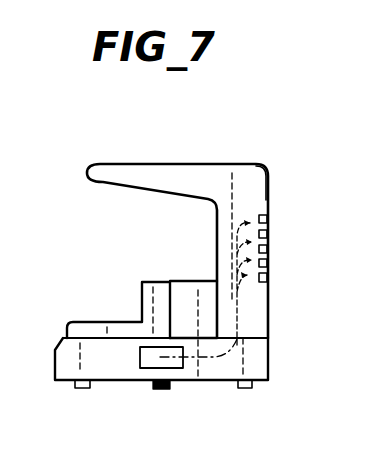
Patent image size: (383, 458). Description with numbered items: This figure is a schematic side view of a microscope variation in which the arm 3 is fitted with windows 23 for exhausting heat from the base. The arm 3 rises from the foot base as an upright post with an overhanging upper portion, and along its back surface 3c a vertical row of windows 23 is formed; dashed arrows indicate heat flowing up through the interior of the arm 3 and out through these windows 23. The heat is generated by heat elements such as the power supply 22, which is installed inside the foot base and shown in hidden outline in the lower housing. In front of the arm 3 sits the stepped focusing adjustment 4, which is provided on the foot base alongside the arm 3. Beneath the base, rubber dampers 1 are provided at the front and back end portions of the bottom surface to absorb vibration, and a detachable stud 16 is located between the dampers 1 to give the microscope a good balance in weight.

The rubber damper 1 is at (245, 388).
The arm 3 is at (245, 180).
The back surface of the arm 3c is at (269, 191).
The focusing adjustment 4 is at (148, 286).
The stud 16 is at (163, 389).
The power supply 22 is at (140, 364).
The window 23 is at (268, 233).